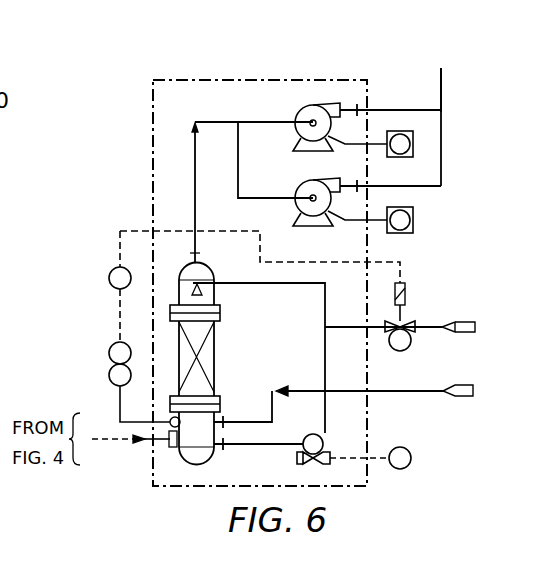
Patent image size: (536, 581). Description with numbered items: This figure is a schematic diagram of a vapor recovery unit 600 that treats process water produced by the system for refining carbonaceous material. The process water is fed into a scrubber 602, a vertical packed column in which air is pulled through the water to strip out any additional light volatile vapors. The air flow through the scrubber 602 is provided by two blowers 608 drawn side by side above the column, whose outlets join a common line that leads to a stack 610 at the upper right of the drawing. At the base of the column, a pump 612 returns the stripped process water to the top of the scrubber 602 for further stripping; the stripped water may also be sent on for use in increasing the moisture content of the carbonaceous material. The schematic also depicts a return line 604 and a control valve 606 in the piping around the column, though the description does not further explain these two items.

The vapor recovery unit 600 is at (474, 217).
The scrubber 602 is at (214, 334).
The return line 604 is at (305, 389).
The control valve 606 is at (429, 323).
The blowers 608 is at (318, 103).
The stack 610 is at (441, 86).
The pump 612 is at (332, 450).